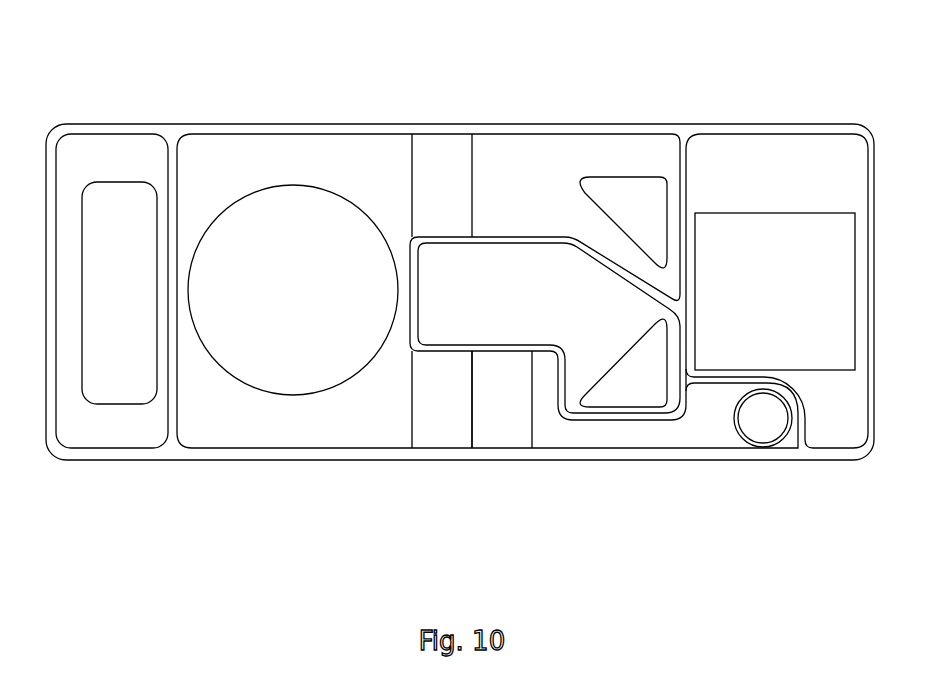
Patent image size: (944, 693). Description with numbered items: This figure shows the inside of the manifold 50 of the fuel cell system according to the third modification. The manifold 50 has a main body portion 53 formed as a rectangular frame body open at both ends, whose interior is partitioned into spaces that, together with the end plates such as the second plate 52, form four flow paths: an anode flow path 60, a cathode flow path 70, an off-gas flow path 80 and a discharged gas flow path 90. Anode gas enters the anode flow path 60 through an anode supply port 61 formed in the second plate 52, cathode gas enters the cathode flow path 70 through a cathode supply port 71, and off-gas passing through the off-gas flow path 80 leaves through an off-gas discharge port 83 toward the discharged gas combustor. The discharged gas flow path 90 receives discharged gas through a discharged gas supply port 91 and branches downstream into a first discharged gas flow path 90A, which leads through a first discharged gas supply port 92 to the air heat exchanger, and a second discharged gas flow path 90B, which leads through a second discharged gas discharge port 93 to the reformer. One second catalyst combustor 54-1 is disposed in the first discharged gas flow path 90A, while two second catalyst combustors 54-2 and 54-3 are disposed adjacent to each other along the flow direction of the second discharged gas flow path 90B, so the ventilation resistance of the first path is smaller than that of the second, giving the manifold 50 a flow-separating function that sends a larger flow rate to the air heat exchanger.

The manifold 50 is at (458, 286).
The second plate 52 is at (822, 172).
The main body portion 53 is at (152, 124).
The second catalyst combustor 54-1 is at (428, 160).
The second catalyst combustor 54-2 is at (432, 430).
The second catalyst combustor 54-3 is at (503, 430).
The anode flow path 60 is at (772, 155).
The anode supply port 61 is at (820, 362).
The cathode flow path 70 is at (495, 258).
The cathode supply port 71 is at (643, 400).
The off-gas flow path 80 is at (98, 423).
The off-gas discharge port 83 is at (118, 398).
The discharged gas flow path 90 is at (322, 152).
The first discharged gas flow path 90A is at (575, 158).
The second discharged gas flow path 90B is at (598, 437).
The discharged gas supply port 91 is at (264, 391).
The first discharged gas supply port 92 is at (627, 183).
The second discharged gas discharge port 93 is at (752, 442).